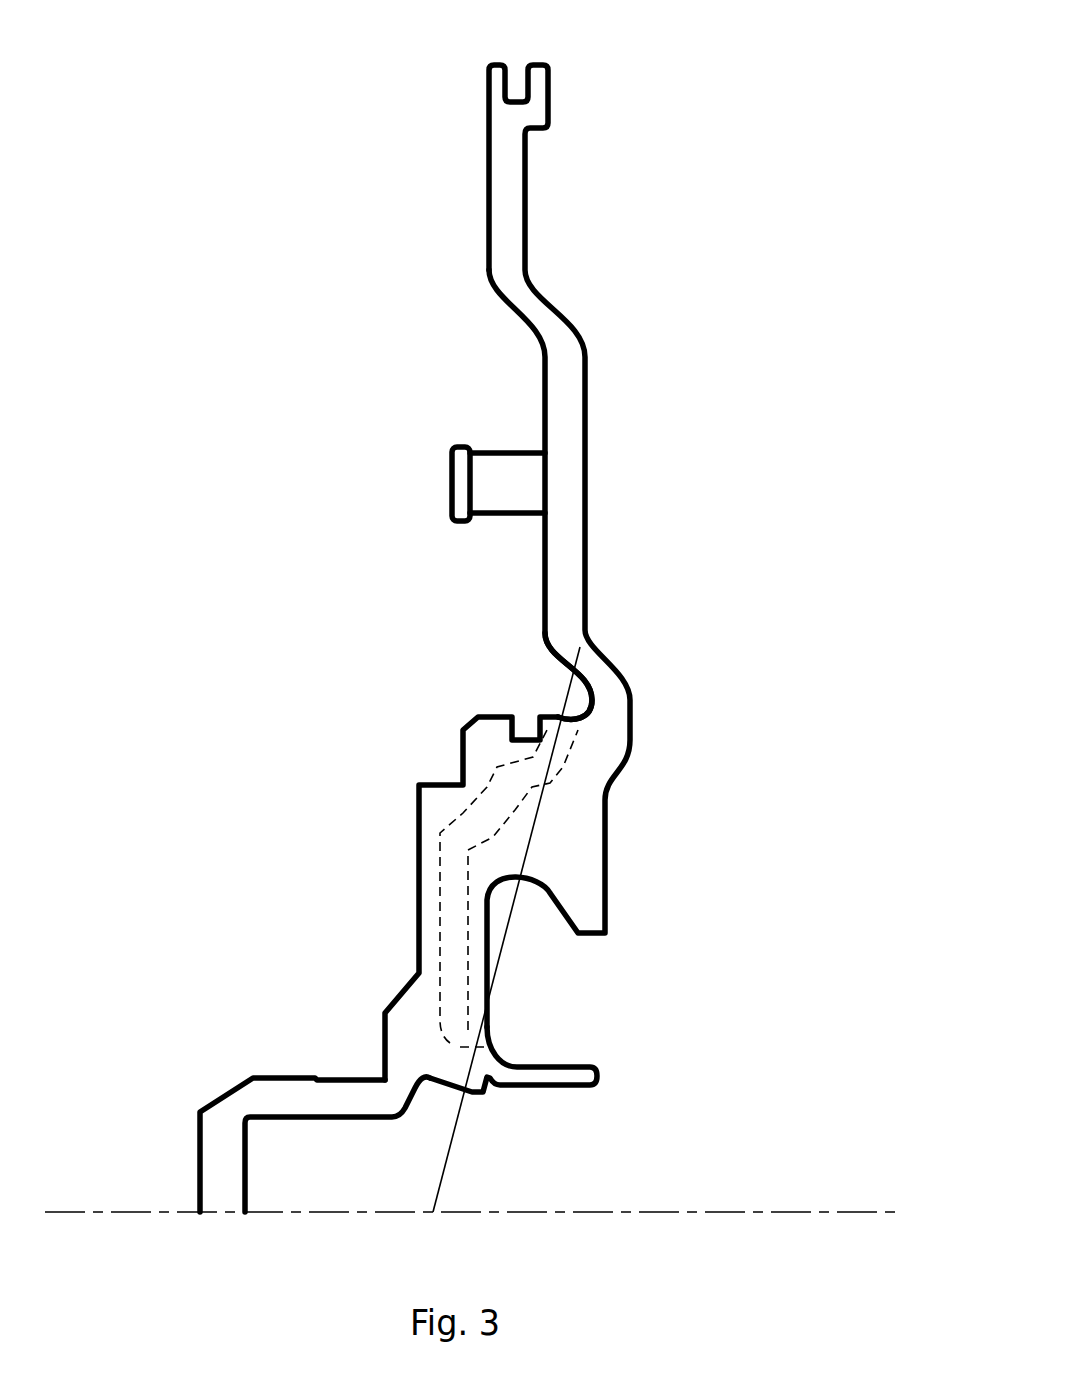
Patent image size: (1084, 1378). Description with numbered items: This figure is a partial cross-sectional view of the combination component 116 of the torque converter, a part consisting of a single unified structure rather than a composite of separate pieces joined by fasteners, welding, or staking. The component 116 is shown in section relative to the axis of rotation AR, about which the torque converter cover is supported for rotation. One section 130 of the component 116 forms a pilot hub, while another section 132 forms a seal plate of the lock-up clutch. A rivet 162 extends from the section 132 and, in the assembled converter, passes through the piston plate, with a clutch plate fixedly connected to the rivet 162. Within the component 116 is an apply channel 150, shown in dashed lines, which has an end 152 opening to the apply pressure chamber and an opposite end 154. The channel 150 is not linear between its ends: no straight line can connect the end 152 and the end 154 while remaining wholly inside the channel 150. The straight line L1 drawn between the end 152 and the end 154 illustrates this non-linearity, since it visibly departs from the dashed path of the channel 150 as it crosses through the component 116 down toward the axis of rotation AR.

The combination component 116 is at (710, 108).
The section 132 is at (588, 388).
The rivet 162 is at (503, 450).
The end 152 is at (556, 712).
The apply channel 150 is at (443, 900).
The end 154 is at (490, 1031).
The section 130 is at (219, 1098).
The straight line L1 is at (448, 1162).
The axis of rotation AR is at (855, 1216).